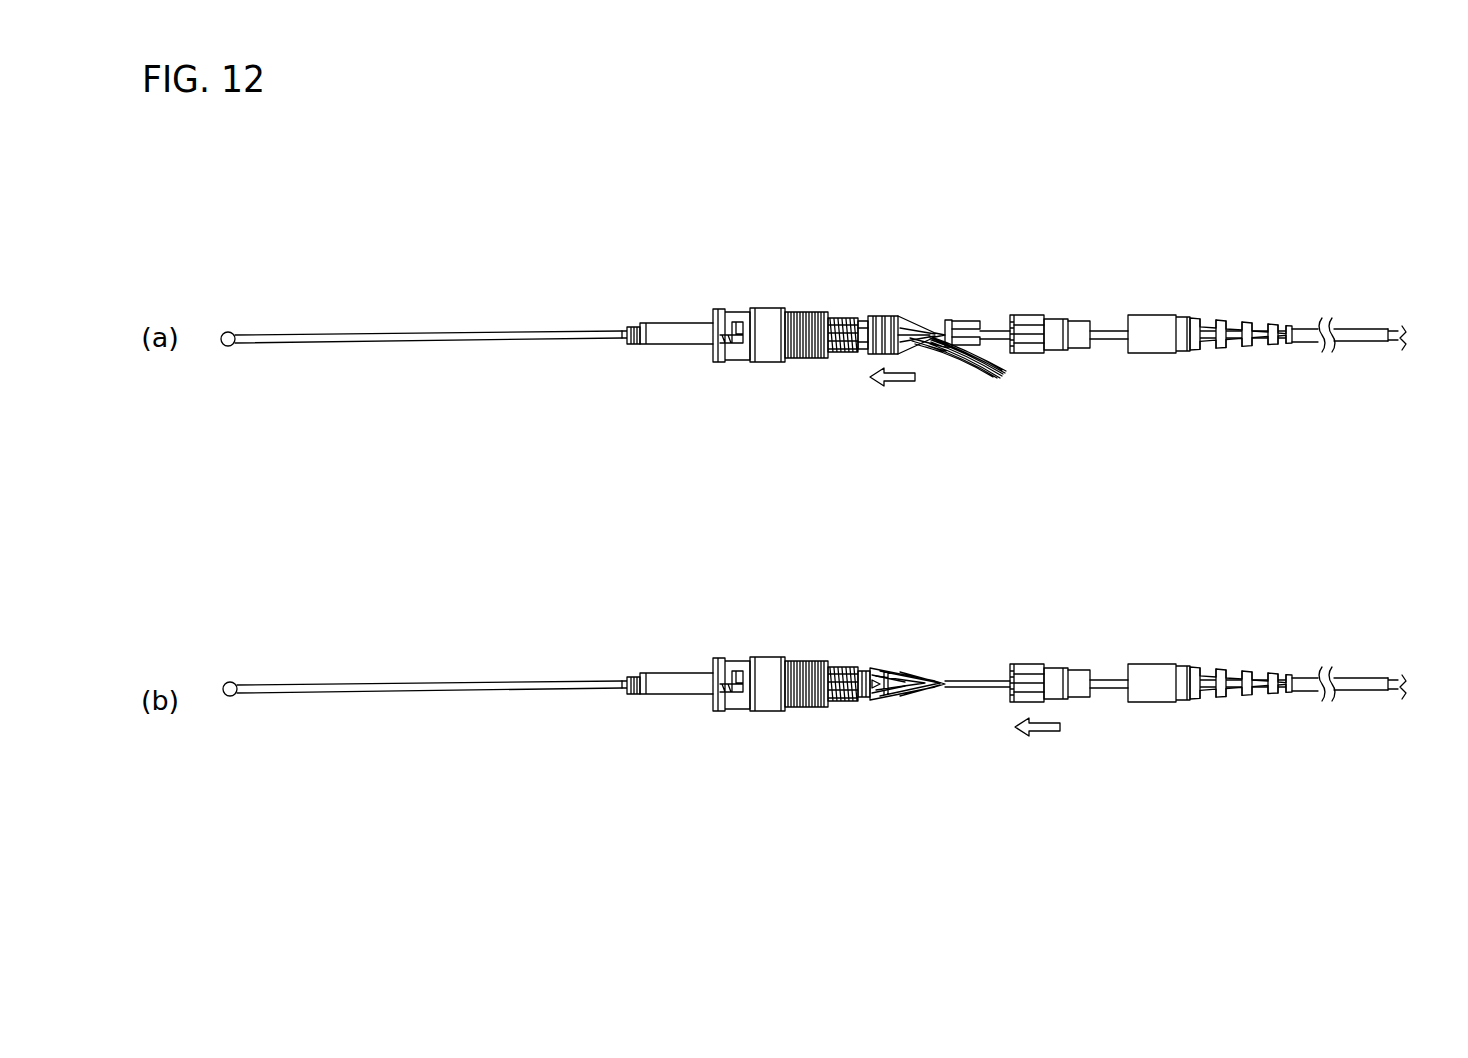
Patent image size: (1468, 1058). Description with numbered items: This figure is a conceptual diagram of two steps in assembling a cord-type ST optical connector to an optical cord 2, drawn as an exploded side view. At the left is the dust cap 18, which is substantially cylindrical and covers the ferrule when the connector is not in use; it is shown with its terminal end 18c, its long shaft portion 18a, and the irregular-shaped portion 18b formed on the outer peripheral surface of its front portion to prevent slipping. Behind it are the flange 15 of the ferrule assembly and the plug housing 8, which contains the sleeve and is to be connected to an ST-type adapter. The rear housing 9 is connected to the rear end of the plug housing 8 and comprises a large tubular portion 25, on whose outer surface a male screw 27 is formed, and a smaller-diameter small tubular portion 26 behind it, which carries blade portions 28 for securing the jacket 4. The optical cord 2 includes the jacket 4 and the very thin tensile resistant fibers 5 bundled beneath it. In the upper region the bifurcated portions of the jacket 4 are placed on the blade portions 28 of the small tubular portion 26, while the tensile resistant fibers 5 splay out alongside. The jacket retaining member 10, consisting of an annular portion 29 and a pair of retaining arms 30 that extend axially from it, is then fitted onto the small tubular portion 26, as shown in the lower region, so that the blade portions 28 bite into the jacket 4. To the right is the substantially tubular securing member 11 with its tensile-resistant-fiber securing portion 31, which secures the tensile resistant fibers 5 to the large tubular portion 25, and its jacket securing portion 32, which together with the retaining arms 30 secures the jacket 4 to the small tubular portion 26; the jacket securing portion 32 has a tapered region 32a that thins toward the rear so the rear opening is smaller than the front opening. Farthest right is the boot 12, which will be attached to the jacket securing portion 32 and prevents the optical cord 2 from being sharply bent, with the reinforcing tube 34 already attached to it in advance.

The optical cord 2 is at (1393, 331).
The jacket 4 is at (917, 323).
The tensile resistant fibers 5 is at (980, 373).
The plug housing 8 is at (742, 316).
The rear housing 9 is at (805, 304).
The jacket retaining member 10 is at (958, 306).
The securing member 11 is at (1037, 302).
The boot 12 is at (1153, 323).
The flange 15 is at (711, 360).
The dust cap 18 is at (672, 324).
The shaft portion 18a is at (428, 337).
The irregular-shaped portion 18b is at (630, 347).
The terminal end 18c is at (231, 332).
The large tubular portion 25 is at (857, 350).
The small tubular portion 26 is at (868, 350).
The male screw 27 is at (843, 320).
The blade portions 28 is at (890, 318).
The annular portion 29 is at (948, 352).
The retaining arms 30 is at (978, 321).
The tensile-resistant-fiber securing portion 31 is at (1028, 345).
The jacket securing portion 32 is at (1080, 349).
The tapered region 32a is at (1068, 321).
The reinforcing tube 34 is at (1348, 331).